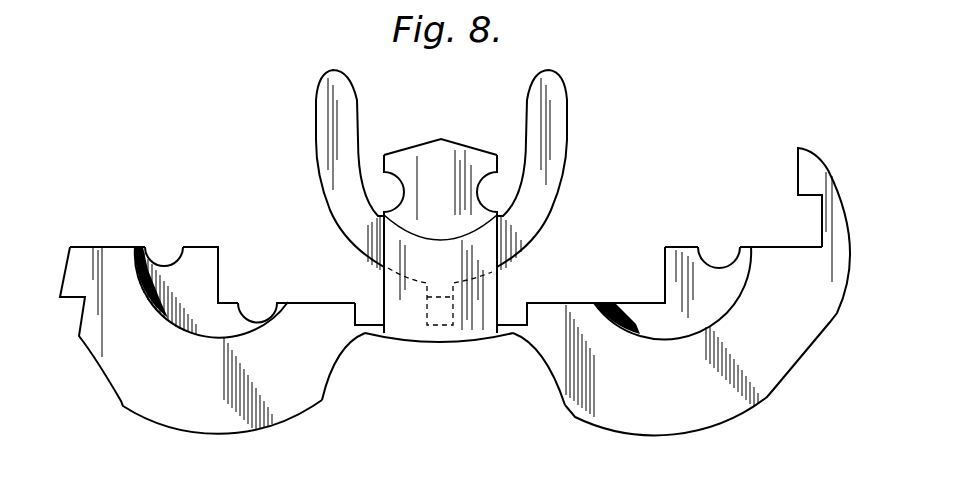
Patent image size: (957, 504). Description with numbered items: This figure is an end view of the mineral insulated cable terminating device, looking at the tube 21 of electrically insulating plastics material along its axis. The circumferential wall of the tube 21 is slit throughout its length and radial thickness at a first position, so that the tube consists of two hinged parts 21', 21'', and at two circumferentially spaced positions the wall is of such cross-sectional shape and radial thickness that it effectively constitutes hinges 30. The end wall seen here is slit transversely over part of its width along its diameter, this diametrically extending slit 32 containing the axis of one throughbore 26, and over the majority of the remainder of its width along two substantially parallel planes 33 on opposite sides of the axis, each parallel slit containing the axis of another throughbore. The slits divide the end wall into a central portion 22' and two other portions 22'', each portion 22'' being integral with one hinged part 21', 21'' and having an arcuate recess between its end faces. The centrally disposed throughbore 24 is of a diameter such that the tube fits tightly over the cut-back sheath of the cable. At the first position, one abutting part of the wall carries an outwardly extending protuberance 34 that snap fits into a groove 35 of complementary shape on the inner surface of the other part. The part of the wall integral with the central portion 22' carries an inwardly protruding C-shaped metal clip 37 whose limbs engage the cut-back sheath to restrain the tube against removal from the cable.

The tube 21 is at (410, 394).
The hinged part 21' is at (673, 315).
The hinged part 21'' is at (191, 365).
The central portion of end wall 22' is at (440, 209).
The portion of end wall 22'' is at (446, 244).
The throughbore 24 is at (746, 284).
The throughbore 26 is at (182, 252).
The hinge 30 is at (513, 337).
The diametrically extending slit 32 is at (688, 247).
The parallel slit 33 is at (310, 302).
The protuberance 34 is at (82, 270).
The groove 35 is at (819, 215).
The metal clip 37 is at (562, 115).